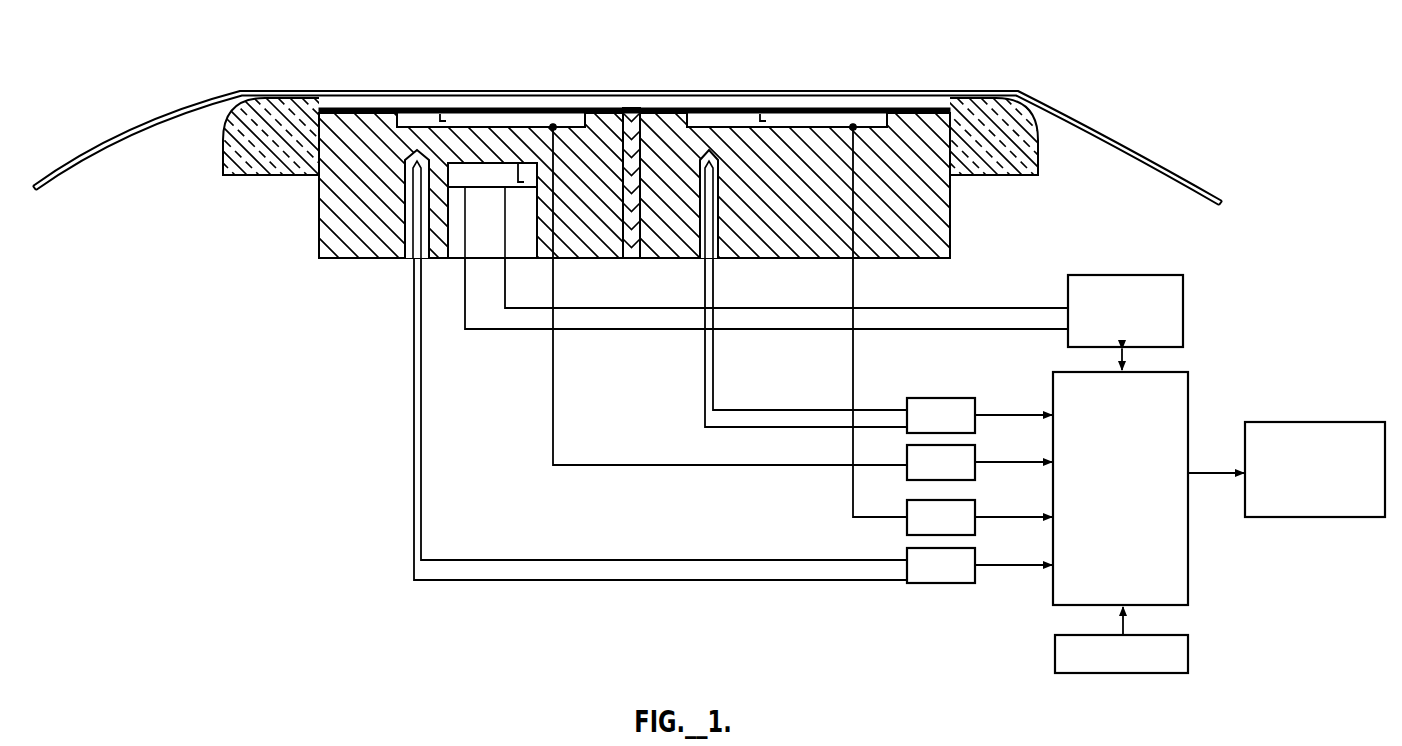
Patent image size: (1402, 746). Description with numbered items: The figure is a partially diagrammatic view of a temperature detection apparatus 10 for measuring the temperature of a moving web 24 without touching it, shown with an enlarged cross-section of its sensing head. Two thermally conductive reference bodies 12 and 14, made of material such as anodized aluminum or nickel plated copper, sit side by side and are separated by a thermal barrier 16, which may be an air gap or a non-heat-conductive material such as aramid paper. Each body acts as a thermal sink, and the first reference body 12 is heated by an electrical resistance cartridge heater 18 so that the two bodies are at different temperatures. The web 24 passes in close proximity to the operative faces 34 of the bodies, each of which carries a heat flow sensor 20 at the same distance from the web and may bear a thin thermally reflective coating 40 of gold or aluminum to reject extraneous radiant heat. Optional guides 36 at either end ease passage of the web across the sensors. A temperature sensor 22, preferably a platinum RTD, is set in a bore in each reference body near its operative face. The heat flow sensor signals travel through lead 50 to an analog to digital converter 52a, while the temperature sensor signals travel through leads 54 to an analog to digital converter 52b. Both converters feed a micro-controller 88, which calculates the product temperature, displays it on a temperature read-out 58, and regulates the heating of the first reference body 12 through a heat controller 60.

The temperature detection apparatus 10 is at (230, 334).
The first reference body 12 is at (330, 237).
The second reference body 14 is at (936, 210).
The thermal barrier 16 is at (630, 108).
The cartridge heater 18 is at (497, 178).
The heat flow sensor 20 is at (485, 120).
The temperature sensor 22 is at (408, 262).
The web 24 is at (1182, 176).
The operative face 34 is at (356, 108).
The guides 36 is at (222, 150).
The thermally reflective coating 40 is at (556, 108).
The lead 50 is at (558, 284).
The analog to digital converter 52a is at (975, 447).
The analog to digital converter 52b is at (975, 399).
The leads 54 is at (417, 448).
The temperature read-out 58 is at (1313, 422).
The heat controller 60 is at (1164, 275).
The micro-controller 88 is at (1188, 374).